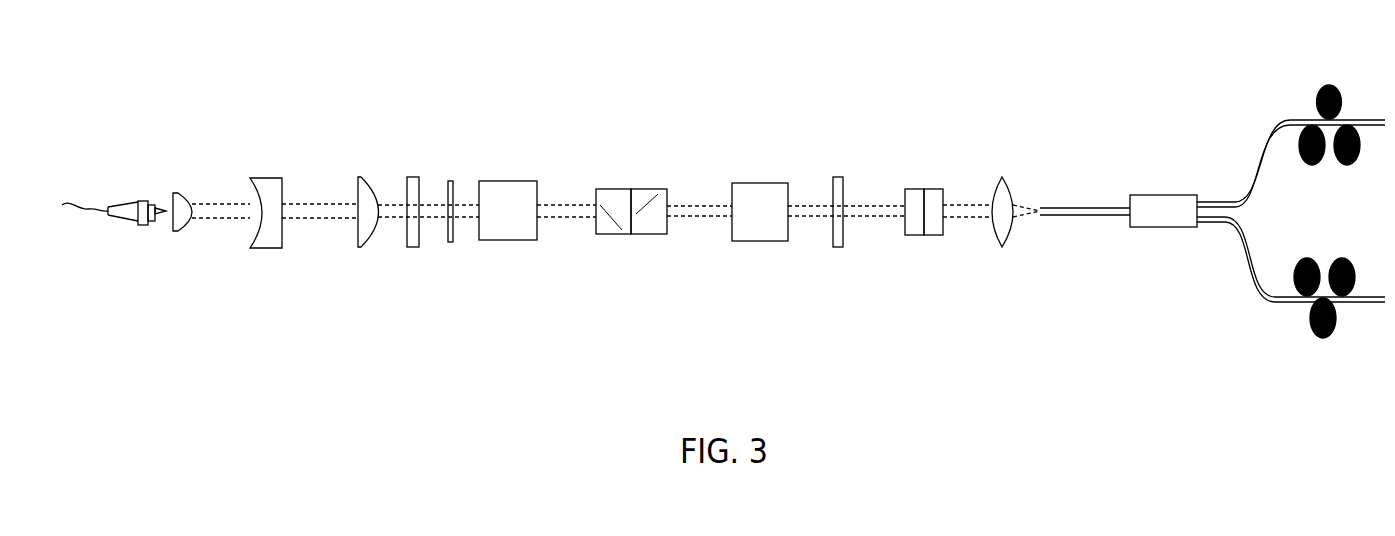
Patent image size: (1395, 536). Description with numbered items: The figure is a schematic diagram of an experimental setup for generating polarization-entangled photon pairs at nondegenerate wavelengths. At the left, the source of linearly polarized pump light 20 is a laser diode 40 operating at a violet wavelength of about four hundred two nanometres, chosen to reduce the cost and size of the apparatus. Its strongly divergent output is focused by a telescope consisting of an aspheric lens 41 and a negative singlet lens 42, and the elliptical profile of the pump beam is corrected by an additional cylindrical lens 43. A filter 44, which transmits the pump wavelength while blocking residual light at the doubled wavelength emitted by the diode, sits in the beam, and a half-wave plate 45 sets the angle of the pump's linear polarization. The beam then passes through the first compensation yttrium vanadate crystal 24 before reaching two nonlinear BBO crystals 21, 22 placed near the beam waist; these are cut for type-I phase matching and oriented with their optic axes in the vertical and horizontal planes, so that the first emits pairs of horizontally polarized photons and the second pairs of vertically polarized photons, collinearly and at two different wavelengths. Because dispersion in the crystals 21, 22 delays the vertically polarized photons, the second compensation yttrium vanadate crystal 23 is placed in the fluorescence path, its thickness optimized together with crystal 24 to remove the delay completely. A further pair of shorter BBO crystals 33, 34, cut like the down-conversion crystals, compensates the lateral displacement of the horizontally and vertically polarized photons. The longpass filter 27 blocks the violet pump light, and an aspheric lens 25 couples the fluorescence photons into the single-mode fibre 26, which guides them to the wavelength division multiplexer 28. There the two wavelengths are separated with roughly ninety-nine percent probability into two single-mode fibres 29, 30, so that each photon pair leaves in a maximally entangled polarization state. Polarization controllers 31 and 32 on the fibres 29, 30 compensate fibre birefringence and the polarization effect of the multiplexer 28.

The linearly polarized pump light 20 is at (213, 198).
The first nonlinear BBO crystal 21 is at (605, 238).
The second nonlinear BBO crystal 22 is at (655, 190).
The second compensation yttrium vanadate crystal 23 is at (757, 243).
The first compensation yttrium vanadate crystal 24 is at (503, 180).
The aspheric lens 25 is at (1003, 250).
The single-mode fibre 26 is at (1067, 205).
The longpass filter 27 is at (838, 173).
The wavelength division multiplexer 28 is at (1135, 233).
The first single-mode fibre 29 is at (1260, 147).
The second single-mode fibre 30 is at (1255, 285).
The first polarization controller 31 is at (1335, 87).
The second polarization controller 32 is at (1333, 337).
The first additional BBO crystal 33 is at (910, 237).
The second additional BBO crystal 34 is at (933, 190).
The laser diode 40 is at (143, 228).
The aspheric lens 41 is at (178, 233).
The negative singlet lens 42 is at (263, 252).
The cylindrical lens 43 is at (365, 173).
The filter 44 is at (413, 252).
The half-wave plate 45 is at (452, 178).